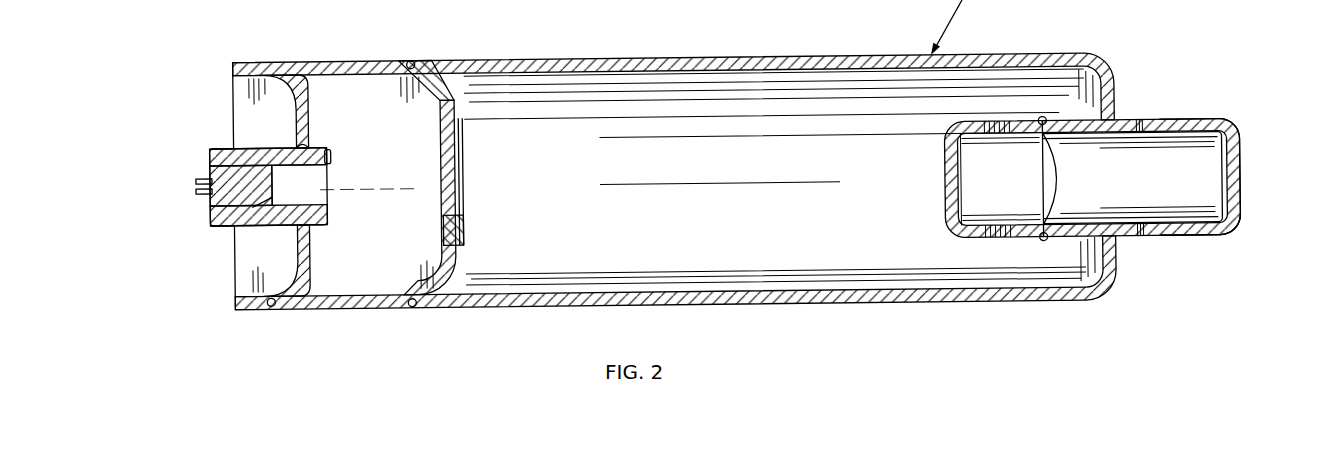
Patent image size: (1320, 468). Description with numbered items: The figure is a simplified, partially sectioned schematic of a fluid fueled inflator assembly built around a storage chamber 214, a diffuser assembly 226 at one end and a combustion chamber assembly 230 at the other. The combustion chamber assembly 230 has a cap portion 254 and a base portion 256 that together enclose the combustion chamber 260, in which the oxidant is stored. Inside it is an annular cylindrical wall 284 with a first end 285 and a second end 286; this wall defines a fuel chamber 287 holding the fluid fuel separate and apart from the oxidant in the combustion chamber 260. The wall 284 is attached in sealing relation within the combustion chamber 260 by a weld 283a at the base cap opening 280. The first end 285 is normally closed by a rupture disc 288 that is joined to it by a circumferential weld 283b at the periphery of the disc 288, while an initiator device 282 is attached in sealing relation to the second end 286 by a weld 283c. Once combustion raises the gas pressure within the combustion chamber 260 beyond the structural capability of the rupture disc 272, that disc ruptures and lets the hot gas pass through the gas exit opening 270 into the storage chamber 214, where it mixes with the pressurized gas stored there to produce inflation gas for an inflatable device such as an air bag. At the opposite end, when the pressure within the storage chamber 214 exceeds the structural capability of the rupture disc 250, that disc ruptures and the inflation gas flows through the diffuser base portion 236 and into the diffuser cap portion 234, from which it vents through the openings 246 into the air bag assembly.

The storage chamber 214 is at (568, 82).
The diffuser assembly 226 is at (1228, 113).
The combustion chamber assembly 230 is at (341, 52).
The diffuser cap portion 234 is at (1208, 237).
The diffuser base portion 236 is at (943, 182).
The openings 246 is at (1163, 123).
The rupture disc 250 is at (1077, 175).
The combustion chamber assembly cap portion 254 is at (393, 312).
The combustion chamber assembly base portion 256 is at (299, 290).
The combustion chamber 260 is at (393, 247).
The gas exit opening 270 is at (440, 168).
The rupture disc 272 is at (462, 168).
The base cap opening 280 is at (312, 112).
The initiator device 282 is at (216, 176).
The weld 283a is at (290, 147).
The circumferential weld 283b is at (328, 217).
The weld 283c is at (211, 222).
The annular cylindrical wall 284 is at (219, 147).
The first end 285 is at (323, 150).
The second end 286 is at (223, 226).
The fuel chamber 287 is at (313, 190).
The rupture disc 288 is at (331, 164).